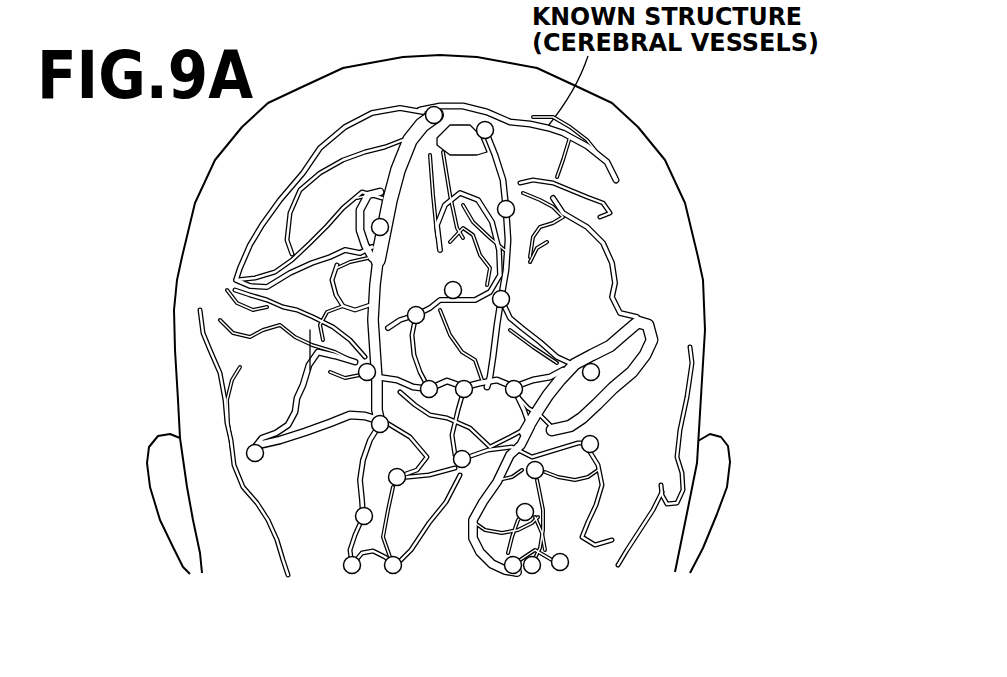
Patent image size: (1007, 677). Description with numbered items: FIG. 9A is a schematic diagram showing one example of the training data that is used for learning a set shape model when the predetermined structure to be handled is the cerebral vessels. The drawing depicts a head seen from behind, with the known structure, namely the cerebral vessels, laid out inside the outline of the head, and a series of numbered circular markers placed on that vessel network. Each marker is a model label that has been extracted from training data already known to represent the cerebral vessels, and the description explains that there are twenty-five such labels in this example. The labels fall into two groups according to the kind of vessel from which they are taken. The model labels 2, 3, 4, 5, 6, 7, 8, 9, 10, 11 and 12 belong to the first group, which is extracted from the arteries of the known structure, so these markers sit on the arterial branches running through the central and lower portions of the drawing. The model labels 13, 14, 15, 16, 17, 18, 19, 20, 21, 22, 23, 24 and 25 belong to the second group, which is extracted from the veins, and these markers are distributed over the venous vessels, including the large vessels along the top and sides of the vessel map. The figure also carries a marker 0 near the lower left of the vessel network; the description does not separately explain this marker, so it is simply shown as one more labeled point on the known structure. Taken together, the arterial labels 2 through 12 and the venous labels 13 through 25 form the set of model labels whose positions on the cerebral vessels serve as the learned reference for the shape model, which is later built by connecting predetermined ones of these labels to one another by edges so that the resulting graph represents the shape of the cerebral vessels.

The vessel feature point 0 is at (402, 559).
The model label 2 is at (427, 375).
The model label 3 is at (367, 353).
The model label 4 is at (534, 550).
The model label 5 is at (546, 469).
The model label 6 is at (523, 384).
The model label 7 is at (601, 367).
The model label 8 is at (362, 501).
The model label 9 is at (513, 550).
The model label 10 is at (479, 459).
The model label 11 is at (468, 372).
The model label 12 is at (516, 296).
The model label 13 is at (522, 208).
The model label 14 is at (500, 128).
The model label 15 is at (437, 101).
The model label 16 is at (396, 226).
The model label 17 is at (365, 415).
The model label 18 is at (463, 276).
The model label 19 is at (418, 298).
The model label 20 is at (247, 437).
The model label 21 is at (403, 493).
The model label 22 is at (362, 550).
The model label 23 is at (606, 442).
The model label 24 is at (543, 508).
The model label 25 is at (578, 561).